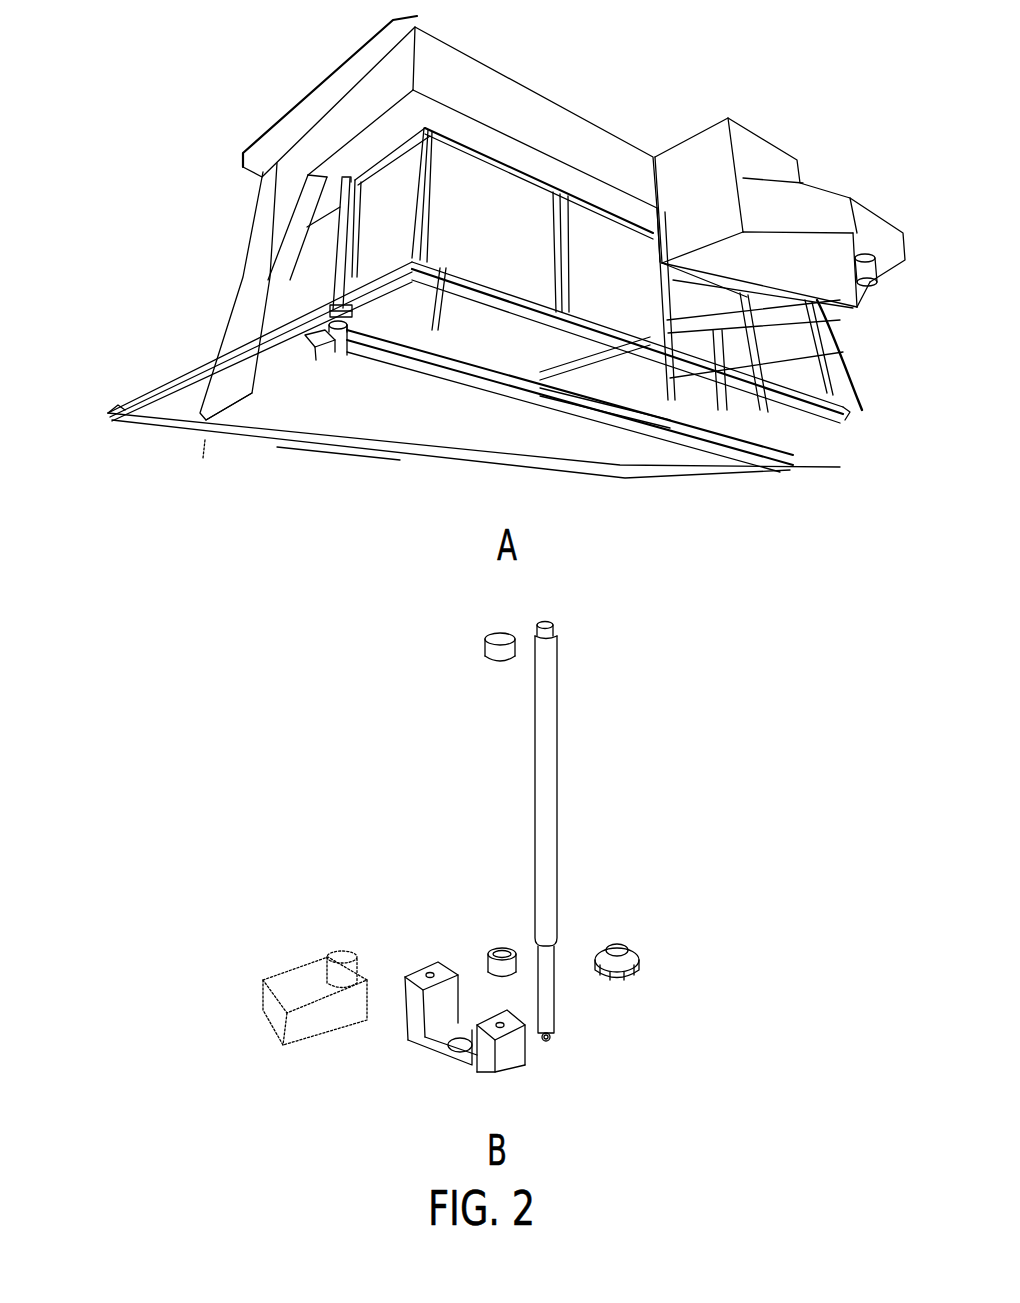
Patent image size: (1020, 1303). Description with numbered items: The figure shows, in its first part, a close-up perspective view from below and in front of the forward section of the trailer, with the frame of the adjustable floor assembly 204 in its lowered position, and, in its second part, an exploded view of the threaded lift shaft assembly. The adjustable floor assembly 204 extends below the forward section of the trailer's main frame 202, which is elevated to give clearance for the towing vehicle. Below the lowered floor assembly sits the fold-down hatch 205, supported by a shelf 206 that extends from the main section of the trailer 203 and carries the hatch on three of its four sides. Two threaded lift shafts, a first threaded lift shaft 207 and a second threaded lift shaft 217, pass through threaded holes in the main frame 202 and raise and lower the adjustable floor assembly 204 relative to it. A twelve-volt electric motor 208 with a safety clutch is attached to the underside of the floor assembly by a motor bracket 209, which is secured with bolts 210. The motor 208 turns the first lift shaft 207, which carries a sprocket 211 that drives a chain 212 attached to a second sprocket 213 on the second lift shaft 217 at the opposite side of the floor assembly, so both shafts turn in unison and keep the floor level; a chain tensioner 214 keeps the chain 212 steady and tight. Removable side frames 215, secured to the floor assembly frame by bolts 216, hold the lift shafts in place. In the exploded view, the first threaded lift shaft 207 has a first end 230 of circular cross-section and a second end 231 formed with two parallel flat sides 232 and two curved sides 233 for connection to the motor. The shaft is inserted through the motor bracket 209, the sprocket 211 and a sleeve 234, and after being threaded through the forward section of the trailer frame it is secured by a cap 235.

In FIG. 2A, the main frame 202 is at (303, 97).
In FIG. 2A, the main section of the trailer 203 is at (123, 338).
In FIG. 2A, the adjustable floor assembly 204 is at (860, 382).
In FIG. 2A, the fold-down hatch 205 is at (460, 417).
In FIG. 2A, the shelf 206 is at (277, 396).
In FIG. 2A, the first threaded lift shaft 207 is at (347, 188).
In FIG. 2B, the first threaded lift shaft 207 is at (545, 752).
In FIG. 2A, the motor 208 is at (320, 350).
In FIG. 2B, the motor 208 is at (305, 985).
In FIG. 2A, the motor bracket 209 is at (318, 333).
In FIG. 2B, the motor bracket 209 is at (490, 1057).
In FIG. 2A, the bolts 210 is at (338, 312).
In FIG. 2A, the sprocket 211 is at (345, 323).
In FIG. 2B, the sprocket 211 is at (635, 952).
In FIG. 2A, the chain 212 is at (665, 395).
In FIG. 2A, the second sprocket 213 is at (780, 427).
In FIG. 2A, the chain tensioner 214 is at (595, 390).
In FIG. 2A, the removable side frames 215 is at (397, 275).
In FIG. 2A, the bolts 216 is at (438, 272).
In FIG. 2A, the second threaded lift shaft 217 is at (765, 412).
In FIG. 2B, the first end 230 is at (555, 631).
In FIG. 2B, the second end 231 is at (548, 990).
In FIG. 2B, the parallel flat sides 232 is at (543, 1037).
In FIG. 2B, the curved sides 233 is at (553, 1036).
In FIG. 2B, the sleeve 234 is at (500, 968).
In FIG. 2B, the cap 235 is at (497, 650).